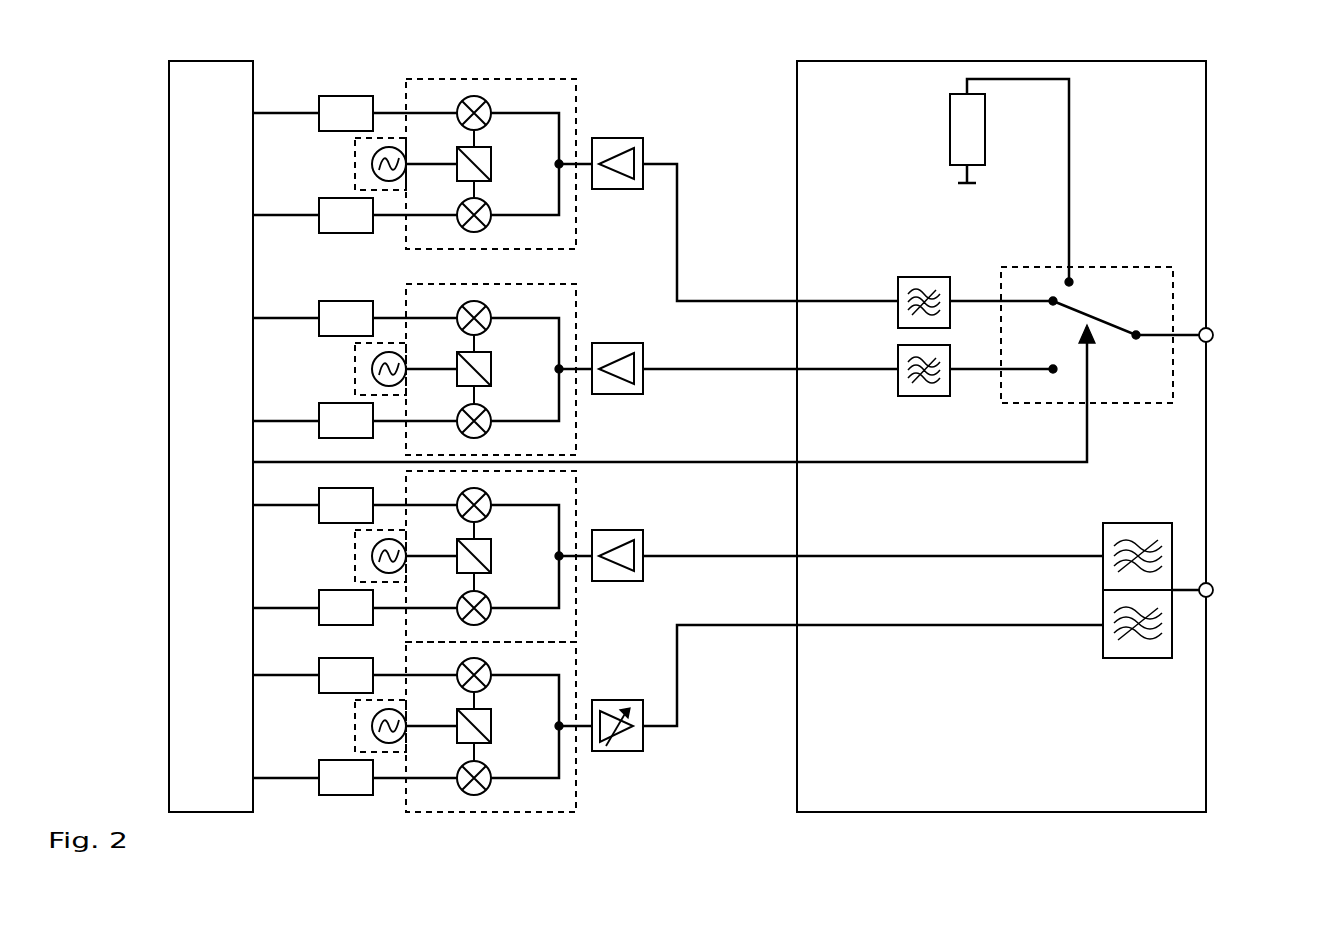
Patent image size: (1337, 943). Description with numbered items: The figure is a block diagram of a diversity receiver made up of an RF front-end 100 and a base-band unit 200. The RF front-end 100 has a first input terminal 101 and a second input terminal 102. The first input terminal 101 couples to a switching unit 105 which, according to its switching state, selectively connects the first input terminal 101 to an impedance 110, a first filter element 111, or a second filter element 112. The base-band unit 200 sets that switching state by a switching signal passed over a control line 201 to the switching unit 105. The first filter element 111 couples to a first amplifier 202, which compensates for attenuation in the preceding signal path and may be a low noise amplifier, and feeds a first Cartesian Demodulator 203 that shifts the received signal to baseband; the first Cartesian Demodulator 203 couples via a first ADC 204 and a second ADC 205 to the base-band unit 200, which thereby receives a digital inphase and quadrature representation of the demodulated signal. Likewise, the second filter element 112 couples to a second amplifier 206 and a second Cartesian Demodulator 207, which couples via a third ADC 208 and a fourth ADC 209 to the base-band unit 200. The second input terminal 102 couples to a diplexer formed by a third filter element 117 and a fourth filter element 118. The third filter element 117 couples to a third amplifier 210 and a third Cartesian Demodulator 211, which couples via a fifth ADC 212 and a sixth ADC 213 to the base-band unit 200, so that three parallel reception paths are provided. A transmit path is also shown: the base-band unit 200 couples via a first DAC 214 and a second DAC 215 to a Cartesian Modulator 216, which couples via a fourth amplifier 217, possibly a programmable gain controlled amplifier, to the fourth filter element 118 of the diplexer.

The RF front-end 100 is at (869, 92).
The first input terminal 101 is at (1215, 343).
The second input terminal 102 is at (1213, 598).
The switching unit 105 is at (1149, 389).
The impedance 110 is at (947, 145).
The first filter element 111 is at (930, 268).
The second filter element 112 is at (922, 398).
The third filter element 117 is at (1140, 518).
The fourth filter element 118 is at (1143, 664).
The base-band unit 200 is at (222, 93).
The control line 201 is at (920, 470).
The first amplifier 202 is at (623, 131).
The first Cartesian Demodulator 203 is at (518, 79).
The first ADC 204 is at (365, 125).
The second ADC 205 is at (365, 227).
The second amplifier 206 is at (623, 335).
The second Cartesian Demodulator 207 is at (576, 420).
The third ADC 208 is at (365, 330).
The fourth ADC 209 is at (365, 433).
The third amplifier 210 is at (623, 584).
The third Cartesian Demodulator 211 is at (576, 502).
The fifth ADC 212 is at (365, 517).
The sixth ADC 213 is at (365, 620).
The first DAC 214 is at (365, 687).
The second DAC 215 is at (365, 790).
The Cartesian Modulator 216 is at (576, 672).
The fourth amplifier 217 is at (623, 756).